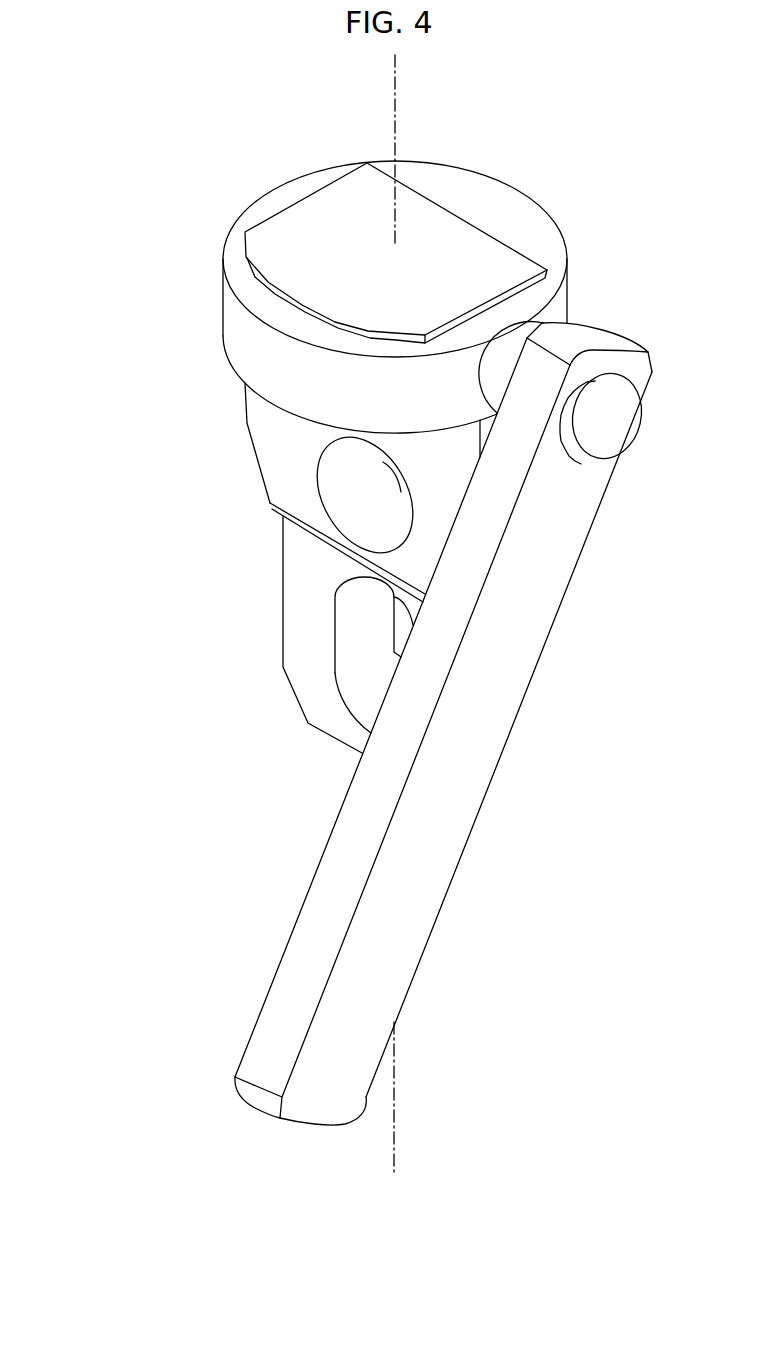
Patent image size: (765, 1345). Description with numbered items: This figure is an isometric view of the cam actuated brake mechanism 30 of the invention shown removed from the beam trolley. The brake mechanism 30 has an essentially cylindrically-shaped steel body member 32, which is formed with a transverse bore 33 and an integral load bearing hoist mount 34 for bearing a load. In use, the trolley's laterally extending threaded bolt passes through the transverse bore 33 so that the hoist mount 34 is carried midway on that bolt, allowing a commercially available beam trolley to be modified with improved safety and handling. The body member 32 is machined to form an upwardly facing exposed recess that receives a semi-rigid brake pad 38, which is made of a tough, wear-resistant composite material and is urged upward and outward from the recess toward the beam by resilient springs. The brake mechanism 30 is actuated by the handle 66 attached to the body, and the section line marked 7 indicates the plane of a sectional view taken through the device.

The section line 7- 7 is at (387, 70).
The brake mechanism 30 is at (195, 190).
The body member 32 is at (223, 297).
The transverse bore 33 is at (363, 495).
The hoist mount 34 is at (312, 609).
The brake pad 38 is at (300, 243).
The handle 66 is at (482, 800).